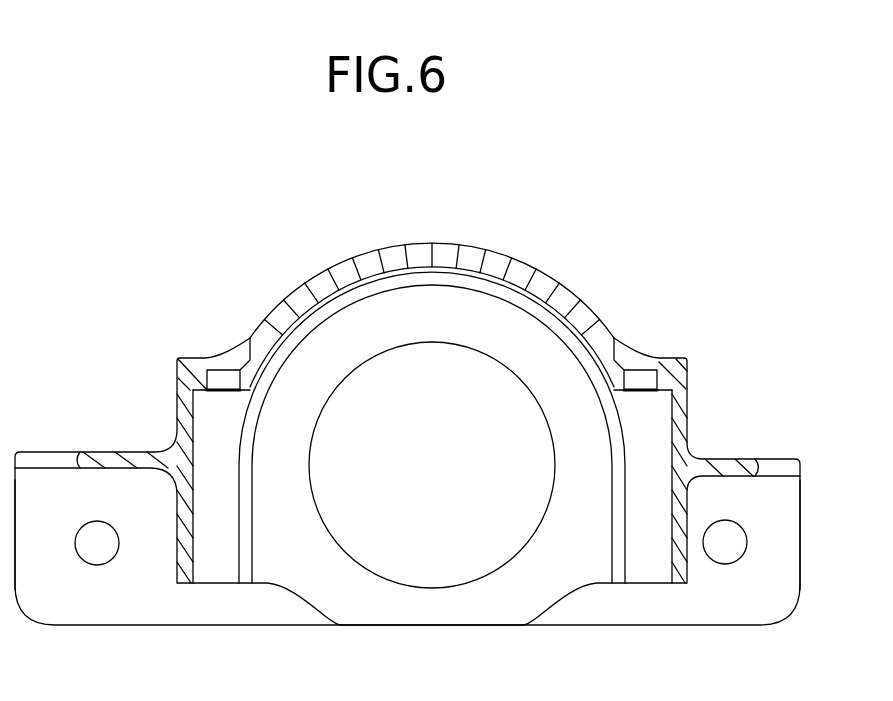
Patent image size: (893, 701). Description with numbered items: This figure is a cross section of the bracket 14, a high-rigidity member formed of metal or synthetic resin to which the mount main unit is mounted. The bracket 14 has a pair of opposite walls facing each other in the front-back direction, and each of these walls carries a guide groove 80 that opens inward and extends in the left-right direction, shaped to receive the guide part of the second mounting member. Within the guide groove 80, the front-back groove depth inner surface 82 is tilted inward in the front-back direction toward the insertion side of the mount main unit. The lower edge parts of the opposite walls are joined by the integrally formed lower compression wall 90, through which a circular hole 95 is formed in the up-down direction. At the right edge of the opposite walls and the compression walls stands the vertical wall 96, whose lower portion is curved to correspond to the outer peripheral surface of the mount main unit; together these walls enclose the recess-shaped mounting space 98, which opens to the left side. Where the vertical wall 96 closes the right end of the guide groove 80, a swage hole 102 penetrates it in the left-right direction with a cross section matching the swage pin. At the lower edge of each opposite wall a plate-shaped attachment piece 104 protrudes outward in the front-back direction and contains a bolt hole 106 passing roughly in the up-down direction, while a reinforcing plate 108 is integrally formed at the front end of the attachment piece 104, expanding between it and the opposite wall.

The bracket 14 is at (659, 268).
The guide groove 80 is at (197, 440).
The front-back groove depth inner surface 82 is at (188, 527).
The lower compression wall 90 is at (485, 605).
The circular hole 95 is at (432, 582).
The vertical wall 96 is at (330, 282).
The mounting space 98 is at (300, 556).
The swage hole 102 is at (208, 367).
The attachment piece 104 is at (140, 597).
The bolt hole 106 is at (103, 555).
The reinforcing plate 108 is at (107, 460).